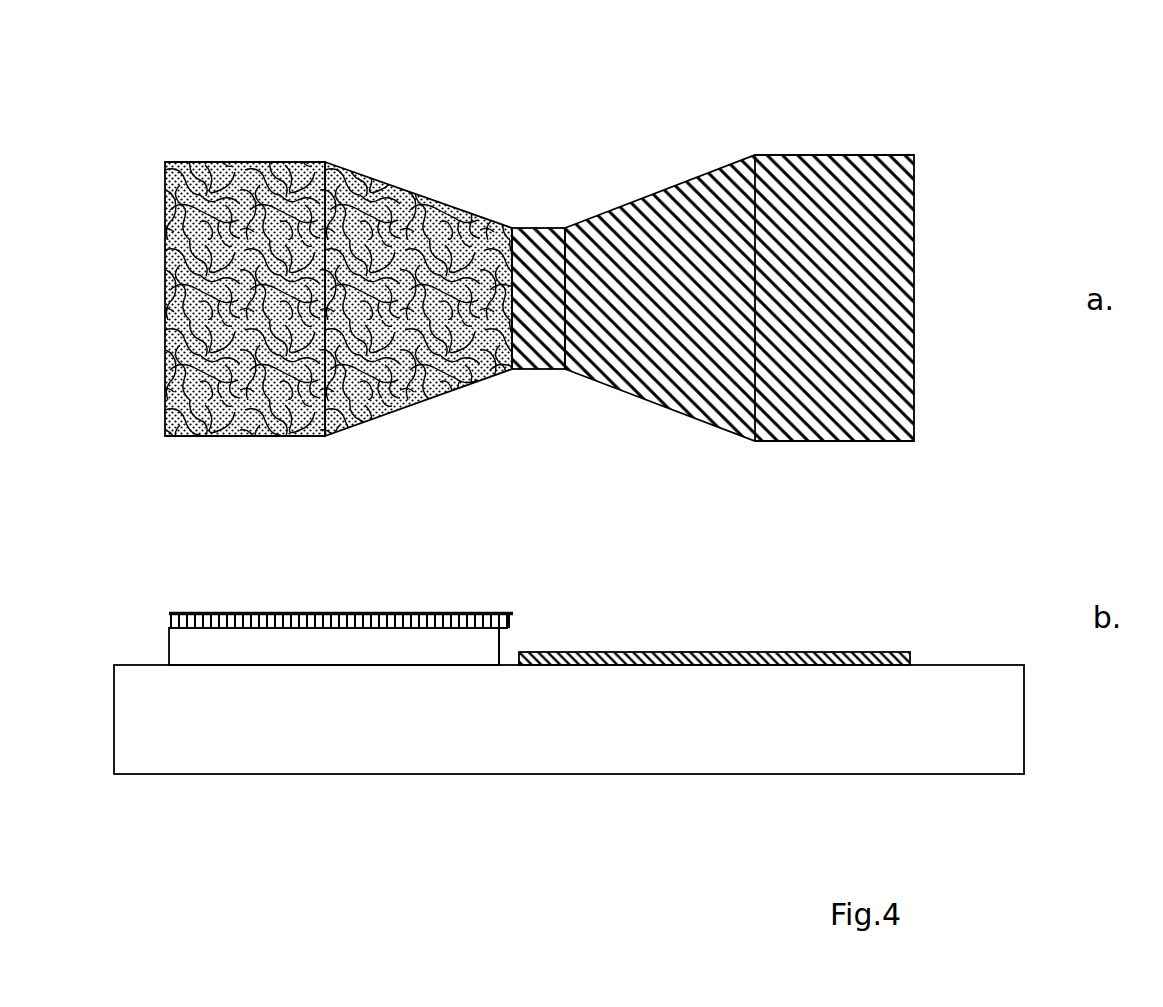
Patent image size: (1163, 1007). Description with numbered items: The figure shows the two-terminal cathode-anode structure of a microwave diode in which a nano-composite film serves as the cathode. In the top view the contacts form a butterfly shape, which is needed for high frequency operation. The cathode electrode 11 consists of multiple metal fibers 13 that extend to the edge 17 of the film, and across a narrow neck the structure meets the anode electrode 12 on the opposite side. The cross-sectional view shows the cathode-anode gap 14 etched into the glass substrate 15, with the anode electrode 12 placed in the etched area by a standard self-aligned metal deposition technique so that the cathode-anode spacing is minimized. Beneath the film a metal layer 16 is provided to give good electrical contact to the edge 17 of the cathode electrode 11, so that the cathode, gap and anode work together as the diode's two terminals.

In FIG. 4A, the cathode electrode 11 is at (278, 178).
In FIG. 4B, the cathode electrode 11 is at (275, 612).
In FIG. 4A, the anode electrode 12 is at (767, 230).
In FIG. 4B, the anode electrode 12 is at (769, 653).
In FIG. 4A, the metal fibers 13 is at (423, 210).
In FIG. 4B, the cathode-anode gap 14 is at (518, 637).
In FIG. 4B, the glass substrate 15 is at (455, 735).
In FIG. 4B, the metal layer 16 is at (169, 617).
In FIG. 4A, the edge 17 is at (537, 228).
In FIG. 4B, the edge 17 is at (520, 605).